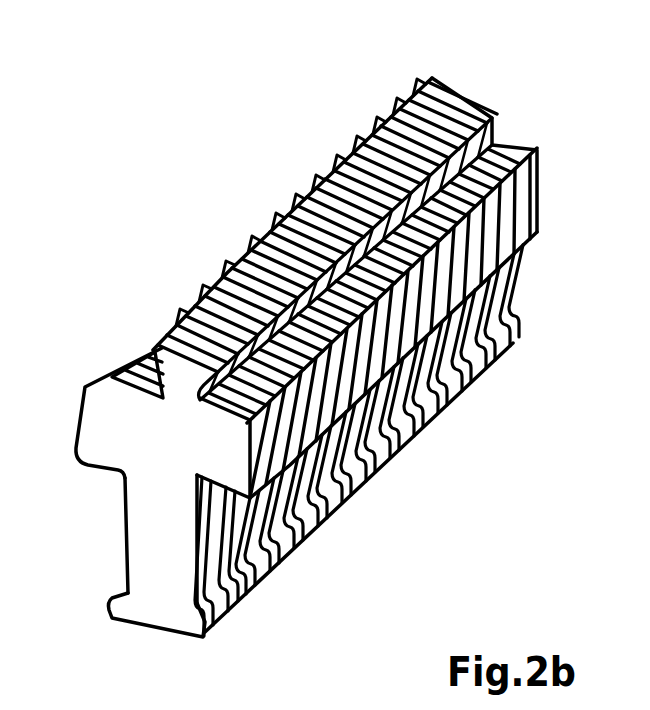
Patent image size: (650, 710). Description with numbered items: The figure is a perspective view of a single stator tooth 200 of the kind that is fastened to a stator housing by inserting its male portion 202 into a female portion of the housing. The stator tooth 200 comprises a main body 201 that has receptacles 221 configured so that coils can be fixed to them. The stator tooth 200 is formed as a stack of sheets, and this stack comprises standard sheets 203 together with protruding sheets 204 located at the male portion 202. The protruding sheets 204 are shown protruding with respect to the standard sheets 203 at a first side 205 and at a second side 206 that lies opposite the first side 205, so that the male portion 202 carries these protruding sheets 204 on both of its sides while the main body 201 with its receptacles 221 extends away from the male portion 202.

The stator tooth 200 is at (301, 349).
The main body 201 is at (158, 595).
The male portion 202 is at (182, 373).
The standard sheets 203 is at (328, 175).
The protruding sheets 204 is at (192, 288).
The first side 205 is at (443, 72).
The second side 206 is at (503, 100).
The receptacles 221 is at (105, 508).